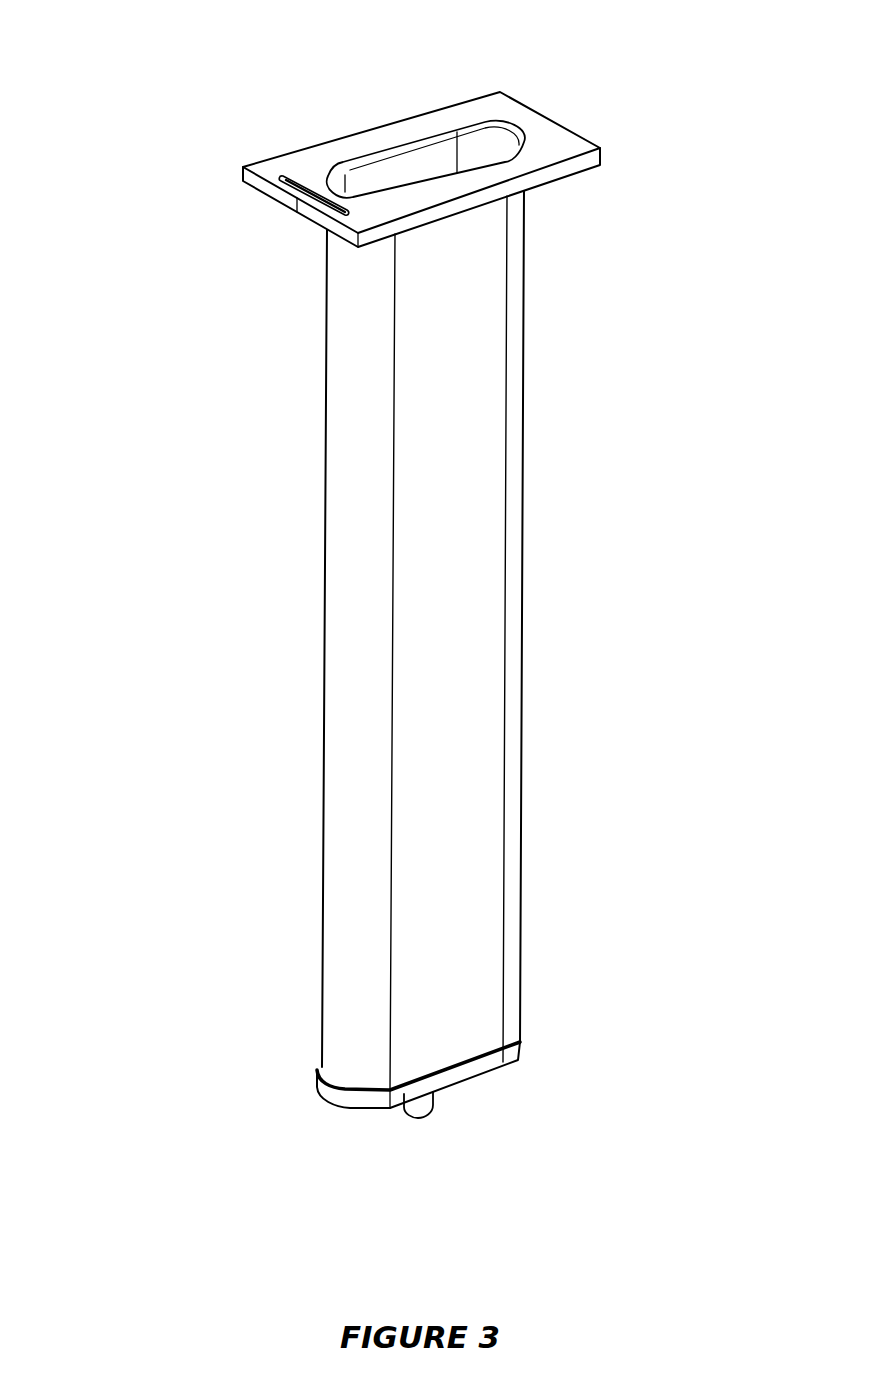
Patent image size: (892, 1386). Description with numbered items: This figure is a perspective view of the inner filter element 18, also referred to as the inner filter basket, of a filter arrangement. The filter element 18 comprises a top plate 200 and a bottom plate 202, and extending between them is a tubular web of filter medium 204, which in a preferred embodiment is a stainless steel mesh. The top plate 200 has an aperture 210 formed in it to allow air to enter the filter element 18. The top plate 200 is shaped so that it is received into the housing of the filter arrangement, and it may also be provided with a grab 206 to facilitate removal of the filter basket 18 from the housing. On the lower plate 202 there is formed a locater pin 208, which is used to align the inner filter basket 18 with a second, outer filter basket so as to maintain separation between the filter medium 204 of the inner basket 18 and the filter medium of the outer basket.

The inner filter element 18 is at (427, 585).
The top plate 200 is at (401, 123).
The bottom plate 202 is at (520, 1042).
The tubular web of filter medium 204 is at (333, 476).
The grab 206 is at (283, 182).
The locater pin 208 is at (438, 1106).
The aperture 210 is at (421, 172).